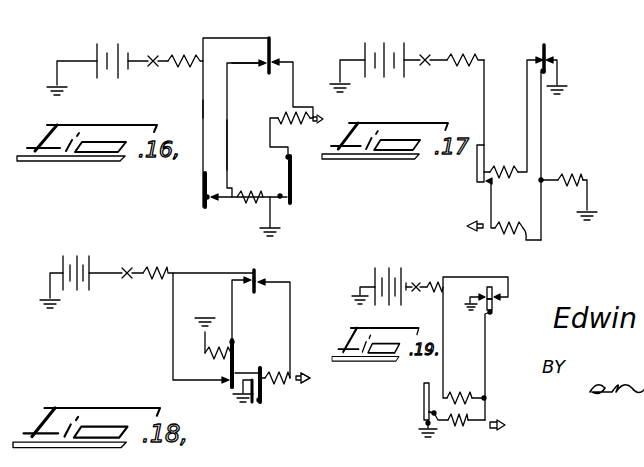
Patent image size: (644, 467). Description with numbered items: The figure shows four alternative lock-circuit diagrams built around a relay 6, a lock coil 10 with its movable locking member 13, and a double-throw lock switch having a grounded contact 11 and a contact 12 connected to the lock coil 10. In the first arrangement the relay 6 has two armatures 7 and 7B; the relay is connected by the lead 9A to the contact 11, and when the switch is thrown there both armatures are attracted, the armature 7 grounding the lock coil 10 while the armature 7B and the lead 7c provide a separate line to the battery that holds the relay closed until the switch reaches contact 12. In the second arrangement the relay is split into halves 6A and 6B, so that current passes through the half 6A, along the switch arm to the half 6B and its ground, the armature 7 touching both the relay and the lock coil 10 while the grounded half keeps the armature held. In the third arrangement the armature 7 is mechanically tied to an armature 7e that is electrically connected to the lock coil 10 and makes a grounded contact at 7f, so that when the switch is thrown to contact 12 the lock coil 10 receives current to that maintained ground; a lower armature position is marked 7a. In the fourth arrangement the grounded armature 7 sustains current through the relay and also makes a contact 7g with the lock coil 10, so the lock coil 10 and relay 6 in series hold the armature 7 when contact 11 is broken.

In FIG. 16, the relay 6 is at (250, 184).
In FIG. 18, the relay 6 is at (205, 355).
In FIG. 19, the relay 6 is at (453, 396).
In FIG. 17, the first half of relay 6A is at (494, 162).
In FIG. 17, the second half of relay 6B is at (573, 170).
In FIG. 16, the armature 7 is at (292, 198).
In FIG. 17, the armature 7 is at (477, 168).
In FIG. 18, the armature 7 is at (236, 367).
In FIG. 19, the armature 7 is at (423, 402).
In FIG. 18, the electrode 7a is at (228, 386).
In FIG. 16, the second armature 7B is at (202, 200).
In FIG. 16, the lead 7c is at (203, 109).
In FIG. 18, the armature 7e is at (266, 386).
In FIG. 18, the contact 7f is at (253, 403).
In FIG. 19, the contact 7g is at (436, 420).
In FIG. 16, the lead 9A is at (218, 145).
In FIG. 16, the magnet coil 10 is at (277, 117).
In FIG. 17, the magnet coil 10 is at (509, 240).
In FIG. 18, the magnet coil 10 is at (277, 372).
In FIG. 19, the magnet coil 10 is at (464, 425).
In FIG. 16, the lock switch contact 11 is at (263, 57).
In FIG. 17, the lock switch contact 11 is at (541, 50).
In FIG. 18, the lock switch contact 11 is at (254, 271).
In FIG. 19, the lock switch contact 11 is at (486, 285).
In FIG. 16, the lock switch contact 12 is at (273, 58).
In FIG. 17, the lock switch contact 12 is at (548, 56).
In FIG. 18, the lock switch contact 12 is at (262, 282).
In FIG. 19, the lock switch contact 12 is at (494, 302).
In FIG. 17, the movable member 13 is at (467, 225).
In FIG. 18, the movable member 13 is at (308, 386).
In FIG. 19, the movable member 13 is at (505, 421).